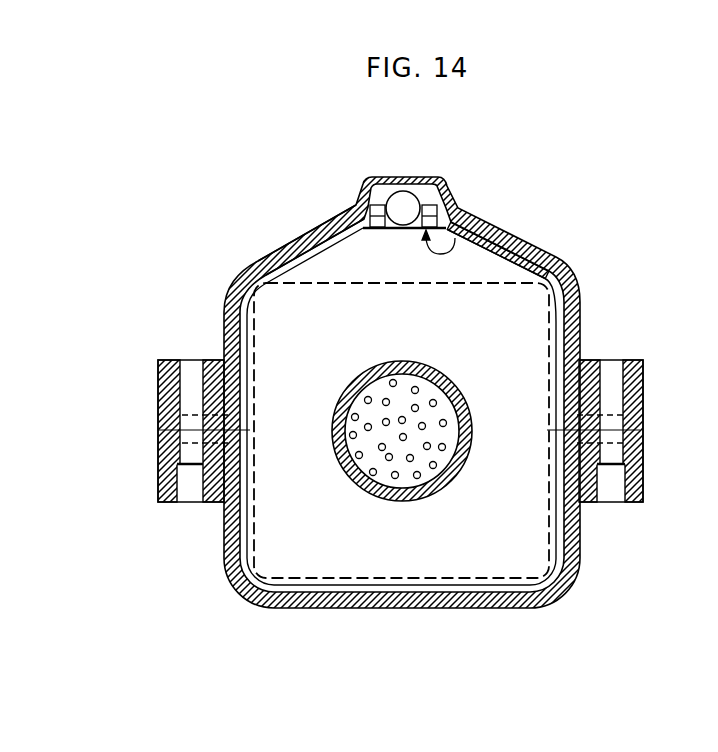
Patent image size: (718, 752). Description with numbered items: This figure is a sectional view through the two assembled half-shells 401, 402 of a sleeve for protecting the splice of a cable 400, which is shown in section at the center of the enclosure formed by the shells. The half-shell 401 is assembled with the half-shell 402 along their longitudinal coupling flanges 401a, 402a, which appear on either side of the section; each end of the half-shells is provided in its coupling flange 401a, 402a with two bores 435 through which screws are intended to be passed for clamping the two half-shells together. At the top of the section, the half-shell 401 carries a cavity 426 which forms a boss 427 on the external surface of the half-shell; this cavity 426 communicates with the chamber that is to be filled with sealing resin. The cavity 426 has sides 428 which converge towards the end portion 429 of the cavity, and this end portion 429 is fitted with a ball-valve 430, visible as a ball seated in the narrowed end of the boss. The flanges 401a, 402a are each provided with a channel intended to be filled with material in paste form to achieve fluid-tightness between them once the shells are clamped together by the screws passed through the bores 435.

The cable 400 is at (381, 498).
The half-shell 401 is at (582, 292).
The longitudinal flange 401a is at (633, 450).
The half-shell 402 is at (533, 613).
The longitudinal flange 402a is at (205, 357).
The cavity 426 is at (500, 235).
The boss 427 is at (315, 230).
The sides 428 is at (283, 247).
The end portion 429 is at (480, 260).
The ball-valve 430 is at (401, 204).
The bores 435 is at (613, 373).